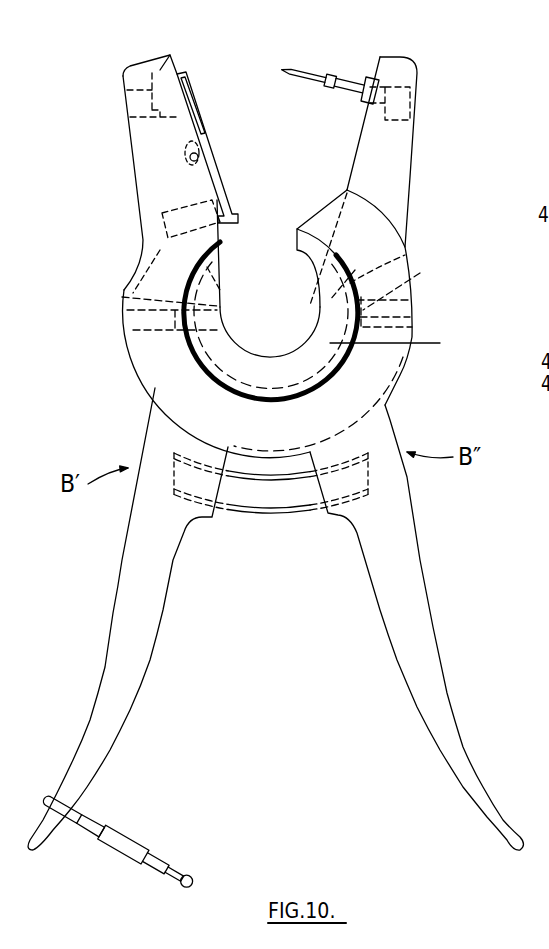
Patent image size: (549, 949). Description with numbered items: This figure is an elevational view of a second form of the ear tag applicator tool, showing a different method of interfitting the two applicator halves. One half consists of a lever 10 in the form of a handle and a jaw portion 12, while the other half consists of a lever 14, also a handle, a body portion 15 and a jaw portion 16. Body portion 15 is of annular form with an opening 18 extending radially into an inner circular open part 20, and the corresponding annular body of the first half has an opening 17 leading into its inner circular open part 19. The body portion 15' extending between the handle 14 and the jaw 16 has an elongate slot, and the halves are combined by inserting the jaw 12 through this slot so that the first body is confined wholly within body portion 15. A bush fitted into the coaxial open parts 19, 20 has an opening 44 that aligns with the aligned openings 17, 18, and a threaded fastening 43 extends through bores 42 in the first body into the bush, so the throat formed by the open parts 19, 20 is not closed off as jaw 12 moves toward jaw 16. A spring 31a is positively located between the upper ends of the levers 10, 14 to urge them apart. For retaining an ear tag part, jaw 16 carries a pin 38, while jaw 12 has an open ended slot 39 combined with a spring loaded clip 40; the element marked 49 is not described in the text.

The lever 10 is at (115, 667).
The jaw portion 12 is at (403, 158).
The lever 14 is at (417, 603).
The body portion 15 is at (342, 404).
The body portion 15' is at (202, 374).
The jaw portion 16 is at (152, 158).
The opening 17 is at (248, 252).
The opening 18 is at (376, 218).
The opening 44 is at (316, 242).
The inner circular open part 19 is at (302, 312).
The inner circular open part 20 is at (271, 325).
The spring 31a is at (277, 510).
The pin 38 is at (314, 76).
The open ended slot 39 is at (172, 54).
The spring loaded clip 40 is at (214, 137).
The bores 42 is at (145, 337).
The threaded fastening 43 is at (122, 297).
The hidden jaw edge 49 is at (218, 294).